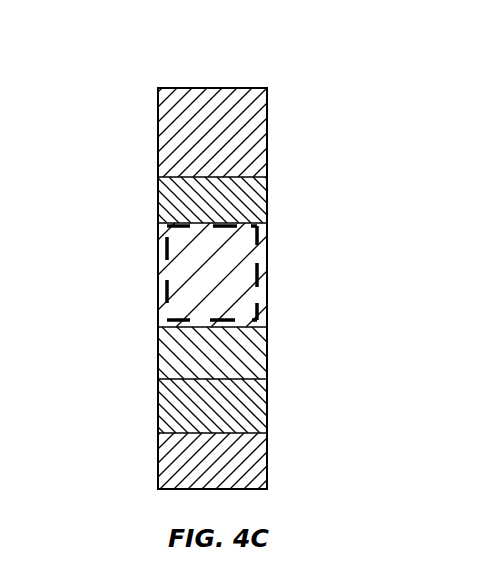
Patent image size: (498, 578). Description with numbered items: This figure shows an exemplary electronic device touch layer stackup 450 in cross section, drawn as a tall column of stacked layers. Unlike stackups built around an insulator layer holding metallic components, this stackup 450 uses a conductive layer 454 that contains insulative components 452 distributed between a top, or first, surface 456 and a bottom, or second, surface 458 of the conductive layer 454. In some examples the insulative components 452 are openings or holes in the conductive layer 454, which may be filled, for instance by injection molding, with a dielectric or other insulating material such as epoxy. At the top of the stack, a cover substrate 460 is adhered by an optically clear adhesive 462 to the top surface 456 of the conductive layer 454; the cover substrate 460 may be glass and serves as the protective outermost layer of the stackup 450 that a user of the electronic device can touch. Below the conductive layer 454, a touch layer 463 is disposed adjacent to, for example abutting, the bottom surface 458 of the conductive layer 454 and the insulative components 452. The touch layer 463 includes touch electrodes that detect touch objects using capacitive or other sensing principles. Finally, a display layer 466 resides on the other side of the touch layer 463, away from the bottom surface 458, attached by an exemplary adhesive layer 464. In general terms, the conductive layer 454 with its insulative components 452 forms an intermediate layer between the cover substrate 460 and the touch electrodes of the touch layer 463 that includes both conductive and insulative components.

The touch layer stackup 450 is at (128, 28).
The cover substrate 460 is at (158, 132).
The optically clear adhesive 462 is at (158, 198).
The insulative component 452 is at (162, 254).
The top surface 456 is at (267, 223).
The conductive layer 454 is at (267, 272).
The bottom surface 458 is at (267, 327).
The touch layer 463 is at (158, 352).
The adhesive layer 464 is at (158, 403).
The display layer 466 is at (158, 458).